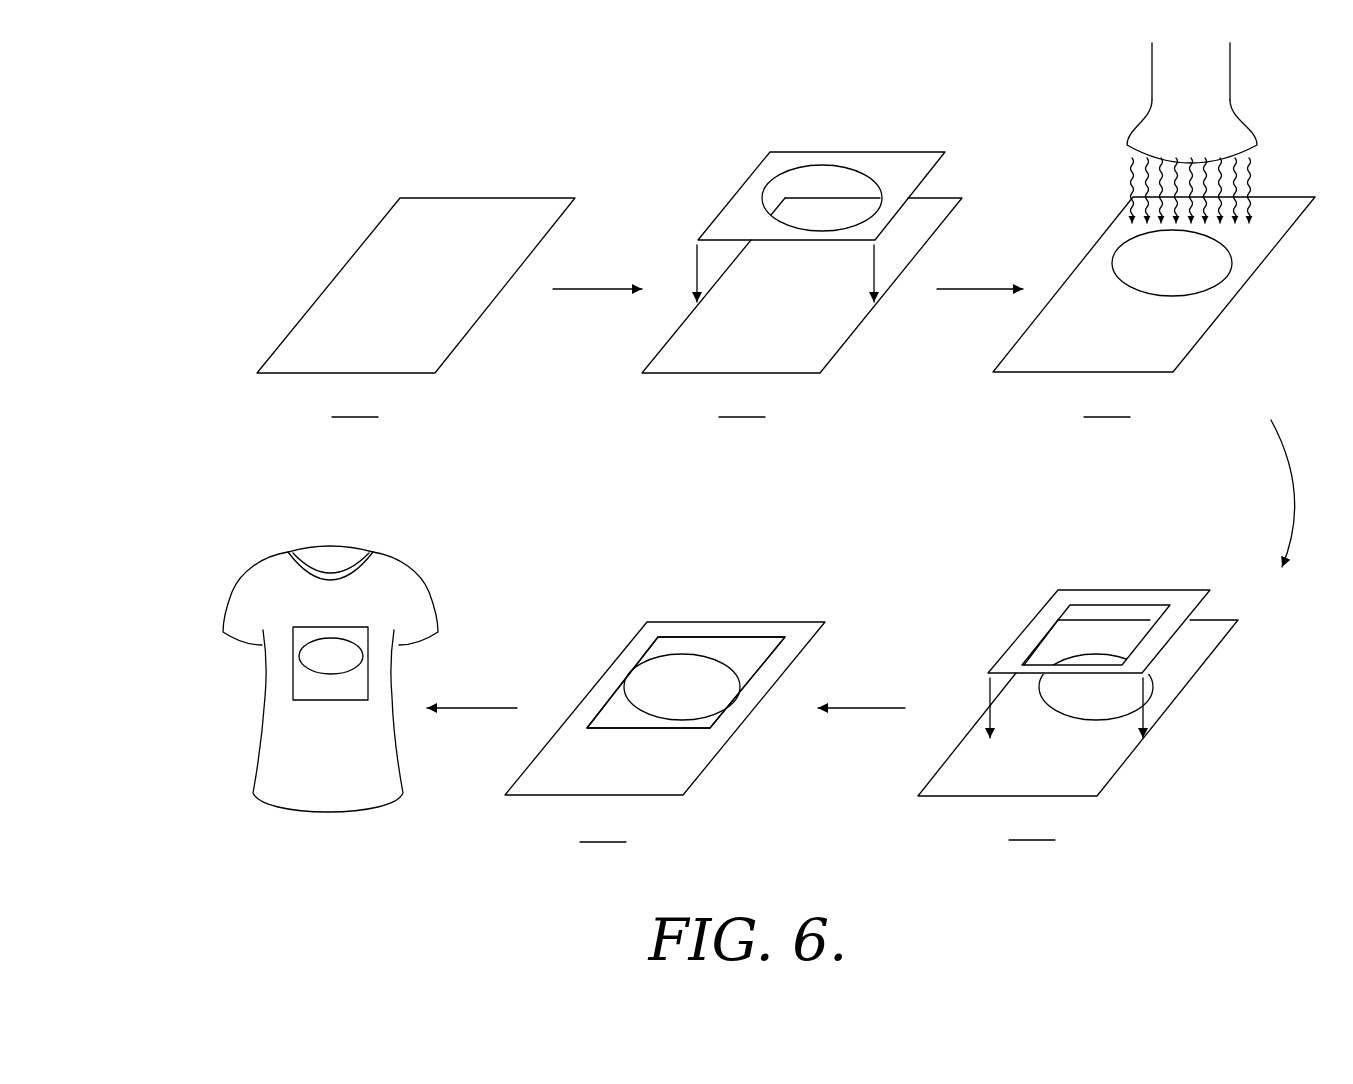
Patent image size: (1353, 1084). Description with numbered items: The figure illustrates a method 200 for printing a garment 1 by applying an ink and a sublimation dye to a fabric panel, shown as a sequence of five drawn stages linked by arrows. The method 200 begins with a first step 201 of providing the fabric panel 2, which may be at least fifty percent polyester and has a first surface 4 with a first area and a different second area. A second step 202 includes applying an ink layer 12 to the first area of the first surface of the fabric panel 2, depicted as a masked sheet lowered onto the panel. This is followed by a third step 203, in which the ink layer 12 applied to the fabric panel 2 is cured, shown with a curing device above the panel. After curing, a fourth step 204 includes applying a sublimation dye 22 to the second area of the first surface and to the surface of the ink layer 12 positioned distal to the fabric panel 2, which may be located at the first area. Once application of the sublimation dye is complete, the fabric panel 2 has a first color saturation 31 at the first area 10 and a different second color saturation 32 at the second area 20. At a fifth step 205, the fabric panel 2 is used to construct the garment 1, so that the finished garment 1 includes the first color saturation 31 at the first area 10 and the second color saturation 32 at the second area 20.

The method 200 is at (178, 212).
The first step 201 is at (386, 330).
The second step 202 is at (802, 285).
The third step 203 is at (1154, 230).
The fourth step 204 is at (1078, 681).
The fifth step 205 is at (715, 740).
The garment 1 is at (392, 568).
The fabric panel 2 is at (388, 237).
The first surface 4 is at (440, 269).
The first area 10 is at (727, 685).
The ink layer 12 is at (832, 178).
The second area 20 is at (683, 727).
The sublimation dye 22 is at (1114, 612).
The first color saturation 31 is at (715, 665).
The second color saturation 32 is at (703, 722).